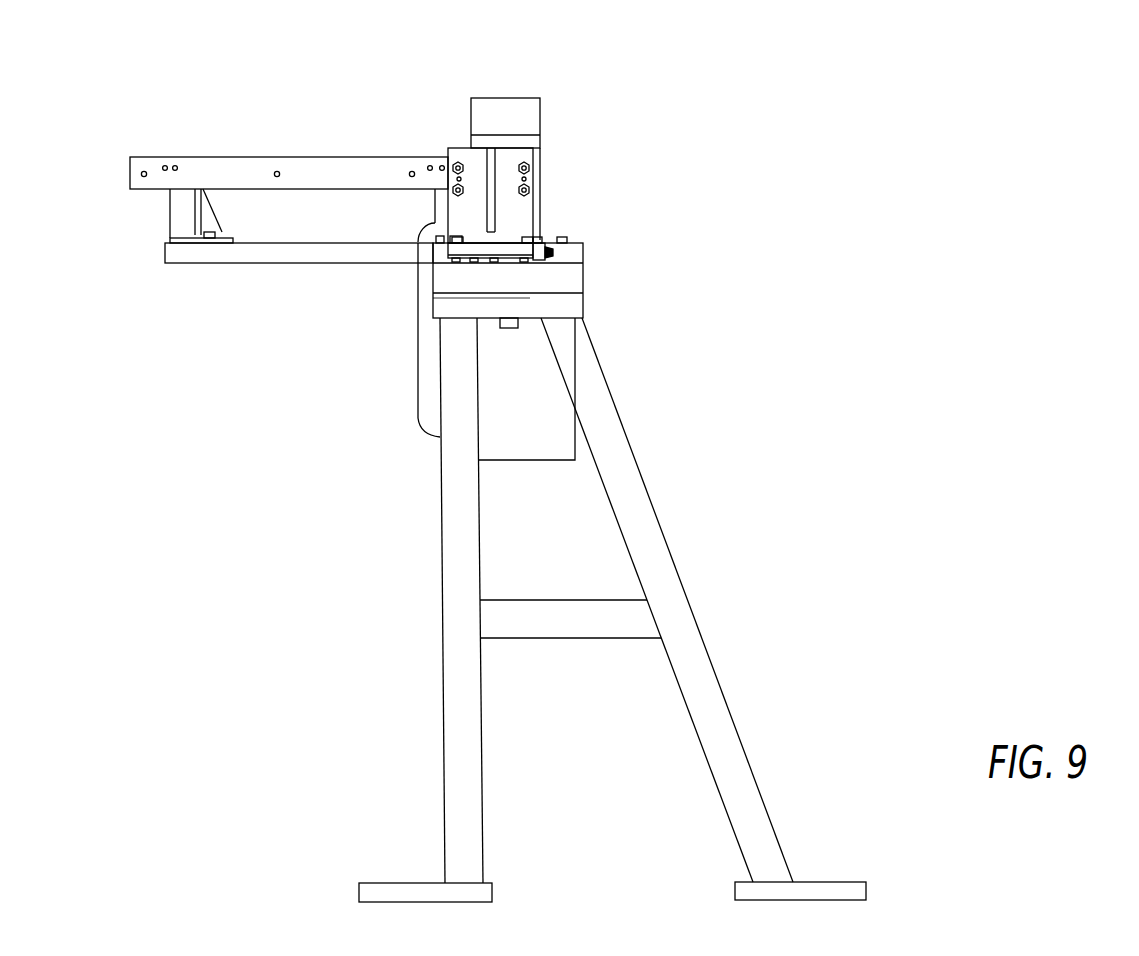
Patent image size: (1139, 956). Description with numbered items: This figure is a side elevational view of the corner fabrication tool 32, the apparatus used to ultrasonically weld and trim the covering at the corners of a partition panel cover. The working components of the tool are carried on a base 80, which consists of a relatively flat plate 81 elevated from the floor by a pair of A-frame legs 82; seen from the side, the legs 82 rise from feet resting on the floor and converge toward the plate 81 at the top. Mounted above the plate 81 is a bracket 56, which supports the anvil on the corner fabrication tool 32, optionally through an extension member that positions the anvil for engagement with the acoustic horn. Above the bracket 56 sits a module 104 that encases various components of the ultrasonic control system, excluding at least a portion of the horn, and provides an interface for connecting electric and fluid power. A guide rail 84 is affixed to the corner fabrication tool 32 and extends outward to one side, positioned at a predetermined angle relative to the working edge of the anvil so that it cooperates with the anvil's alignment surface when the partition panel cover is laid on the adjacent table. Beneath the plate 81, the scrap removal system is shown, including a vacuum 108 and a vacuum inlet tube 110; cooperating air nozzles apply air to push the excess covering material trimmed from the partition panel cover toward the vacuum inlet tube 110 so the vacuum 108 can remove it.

The corner fabrication tool 32 is at (640, 97).
The bracket 56 is at (531, 217).
The base 80 is at (588, 315).
The plate 81 is at (567, 278).
The A-frame legs 82 is at (632, 498).
The guide rail 84 is at (234, 162).
The module 104 is at (510, 102).
The vacuum 108 is at (548, 403).
The vacuum inlet tube 110 is at (427, 375).